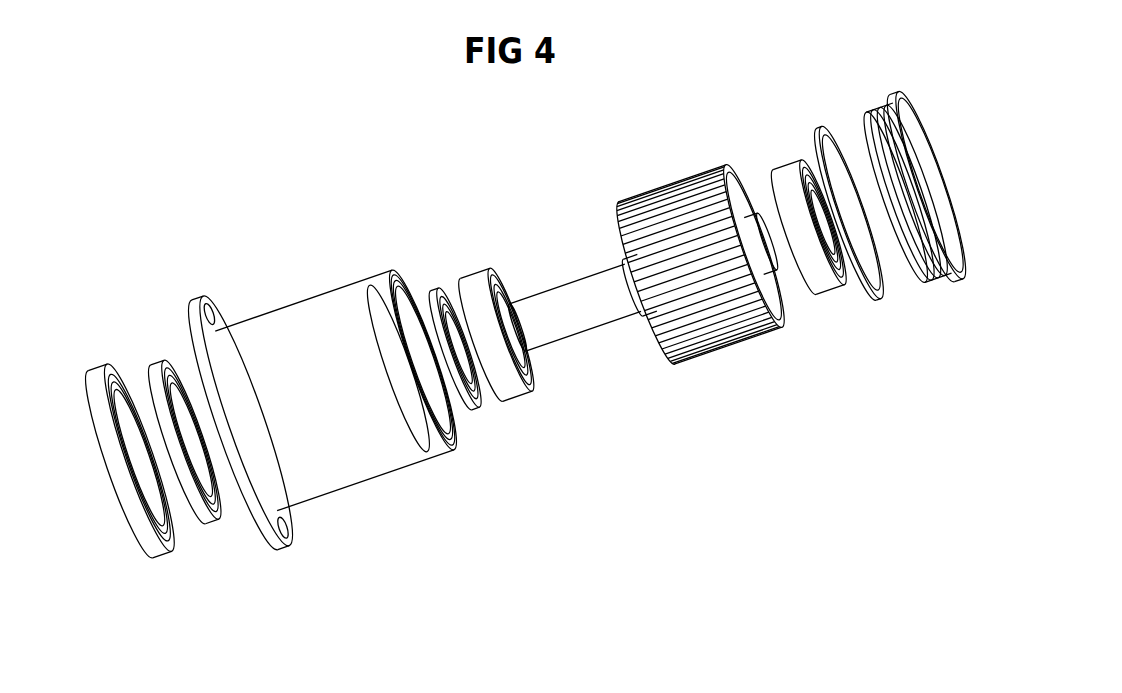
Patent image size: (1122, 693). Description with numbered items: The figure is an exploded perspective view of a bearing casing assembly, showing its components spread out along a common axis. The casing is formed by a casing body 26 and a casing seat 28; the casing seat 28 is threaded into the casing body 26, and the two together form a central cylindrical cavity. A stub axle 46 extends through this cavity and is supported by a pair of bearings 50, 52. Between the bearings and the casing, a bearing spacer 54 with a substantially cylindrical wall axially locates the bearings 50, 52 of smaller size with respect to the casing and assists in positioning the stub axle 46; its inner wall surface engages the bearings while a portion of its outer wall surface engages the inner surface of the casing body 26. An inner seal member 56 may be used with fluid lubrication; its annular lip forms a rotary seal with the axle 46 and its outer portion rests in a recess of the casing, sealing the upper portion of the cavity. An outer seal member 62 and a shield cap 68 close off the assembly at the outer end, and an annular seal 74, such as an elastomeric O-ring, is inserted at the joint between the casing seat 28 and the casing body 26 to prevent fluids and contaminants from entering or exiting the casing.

The casing body 26 is at (330, 293).
The casing seat 28 is at (885, 107).
The stub axle 46 is at (572, 280).
The bearing 50 is at (482, 280).
The bearing 52 is at (783, 182).
The bearing spacer 54 is at (658, 188).
The inner seal member 56 is at (442, 293).
The outer seal member 62 is at (152, 366).
The shield cap 68 is at (108, 366).
The annular seal 74 is at (818, 127).